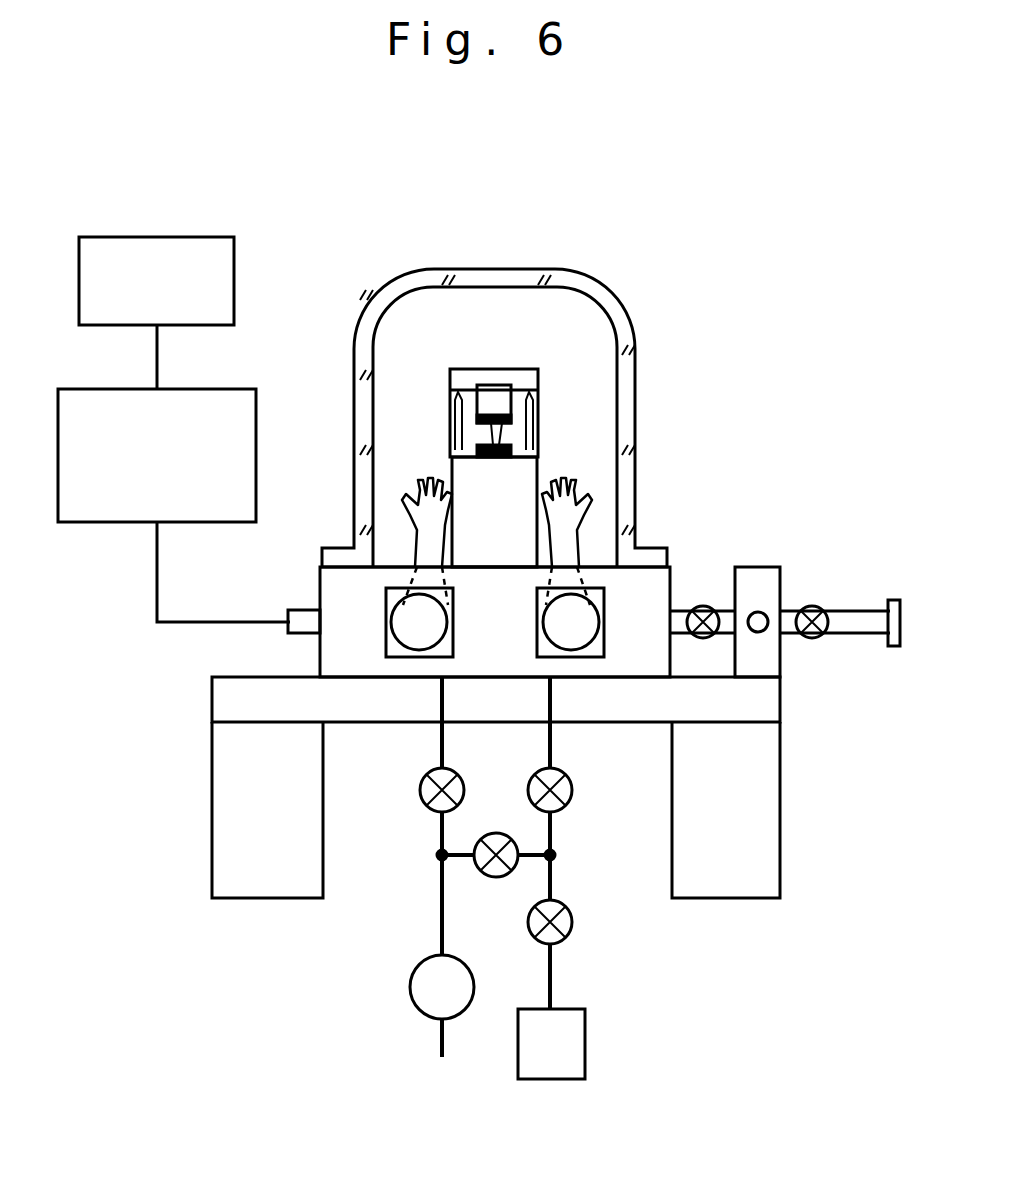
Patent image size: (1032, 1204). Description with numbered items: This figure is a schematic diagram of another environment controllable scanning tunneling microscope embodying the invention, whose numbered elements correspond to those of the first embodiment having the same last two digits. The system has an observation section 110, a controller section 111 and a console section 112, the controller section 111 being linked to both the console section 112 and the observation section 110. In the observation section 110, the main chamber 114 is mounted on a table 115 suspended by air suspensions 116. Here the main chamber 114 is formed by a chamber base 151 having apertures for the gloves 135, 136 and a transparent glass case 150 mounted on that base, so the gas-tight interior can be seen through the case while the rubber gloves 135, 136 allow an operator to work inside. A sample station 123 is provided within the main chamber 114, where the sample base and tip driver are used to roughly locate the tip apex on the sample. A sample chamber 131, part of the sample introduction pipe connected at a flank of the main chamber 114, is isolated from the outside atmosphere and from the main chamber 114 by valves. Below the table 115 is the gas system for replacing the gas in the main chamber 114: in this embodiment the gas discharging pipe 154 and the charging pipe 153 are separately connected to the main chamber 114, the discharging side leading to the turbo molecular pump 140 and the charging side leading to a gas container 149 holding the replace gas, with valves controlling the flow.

The observation section 110 is at (500, 247).
The controller section 111 is at (244, 409).
The console section 112 is at (222, 280).
The main chamber 114 is at (585, 318).
The table 115 is at (766, 703).
The air suspensions 116 is at (766, 786).
The sample station 123 is at (520, 386).
The sample chamber 131 is at (758, 570).
The rubber glove 135 is at (408, 523).
The rubber glove 136 is at (592, 514).
The turbo molecular pump 140 is at (412, 992).
The gas container 149 is at (584, 1036).
The transparent glass case 150 is at (636, 388).
The chamber base 151 is at (662, 585).
The charging pipe 153 is at (553, 744).
The gas discharging pipe 154 is at (442, 742).